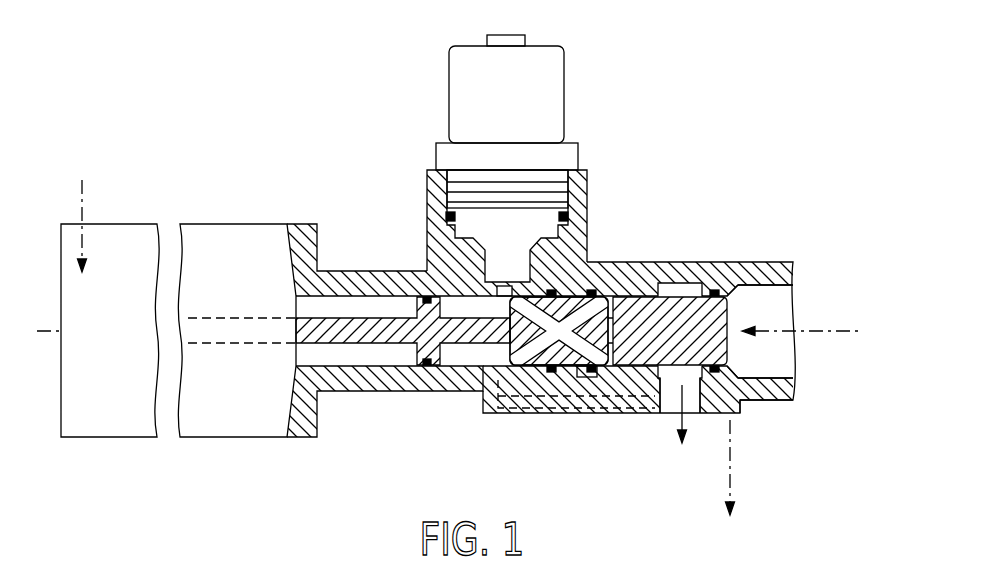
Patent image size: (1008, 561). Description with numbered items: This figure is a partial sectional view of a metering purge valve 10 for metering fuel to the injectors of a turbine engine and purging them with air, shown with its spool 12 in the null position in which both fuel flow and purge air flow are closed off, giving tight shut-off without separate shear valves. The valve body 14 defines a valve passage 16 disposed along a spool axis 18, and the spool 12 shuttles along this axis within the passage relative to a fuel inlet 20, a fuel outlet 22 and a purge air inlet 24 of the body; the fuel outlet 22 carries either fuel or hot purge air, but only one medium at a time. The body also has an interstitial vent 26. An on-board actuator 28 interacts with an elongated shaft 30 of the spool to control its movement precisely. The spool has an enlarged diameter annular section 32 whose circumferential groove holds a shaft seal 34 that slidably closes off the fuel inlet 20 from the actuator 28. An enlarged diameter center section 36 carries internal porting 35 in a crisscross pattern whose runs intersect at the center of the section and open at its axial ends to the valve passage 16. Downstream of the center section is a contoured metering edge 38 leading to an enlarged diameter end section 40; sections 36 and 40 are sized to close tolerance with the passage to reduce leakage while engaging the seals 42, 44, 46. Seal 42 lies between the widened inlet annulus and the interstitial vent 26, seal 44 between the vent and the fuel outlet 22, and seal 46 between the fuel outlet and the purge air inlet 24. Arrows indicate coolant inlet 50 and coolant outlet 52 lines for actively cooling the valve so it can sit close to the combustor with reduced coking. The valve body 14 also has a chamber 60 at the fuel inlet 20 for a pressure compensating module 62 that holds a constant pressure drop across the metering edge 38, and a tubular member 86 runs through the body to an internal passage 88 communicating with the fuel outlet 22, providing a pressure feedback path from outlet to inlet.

The metering purge valve 10 is at (692, 100).
The spool 12 is at (732, 316).
The valve body 14 is at (758, 264).
The valve passage 16 is at (367, 357).
The spool axis 18 is at (827, 333).
The fuel inlet 20 is at (487, 43).
The fuel outlet 22 is at (672, 414).
The purge air inlet 24 is at (787, 290).
The interstitial vent 26 is at (570, 378).
The actuator 28 is at (107, 438).
The elongated shaft 30 is at (348, 325).
The enlarged diameter annular section 32 is at (413, 352).
The shaft seal 34 is at (430, 365).
The internal porting 35 is at (613, 310).
The enlarged diameter center section 36 is at (588, 261).
The contoured metering edge 38 is at (642, 297).
The enlarged diameter end section 40 is at (688, 303).
The seal 42 is at (553, 373).
The seal 44 is at (597, 378).
The seal 46 is at (743, 401).
The coolant inlet 50 is at (83, 180).
The coolant outlet 52 is at (731, 462).
The chamber 60 is at (443, 250).
The pressure compensating module 62 is at (470, 182).
The tubular member 86 is at (503, 293).
The internal passage 88 is at (645, 420).